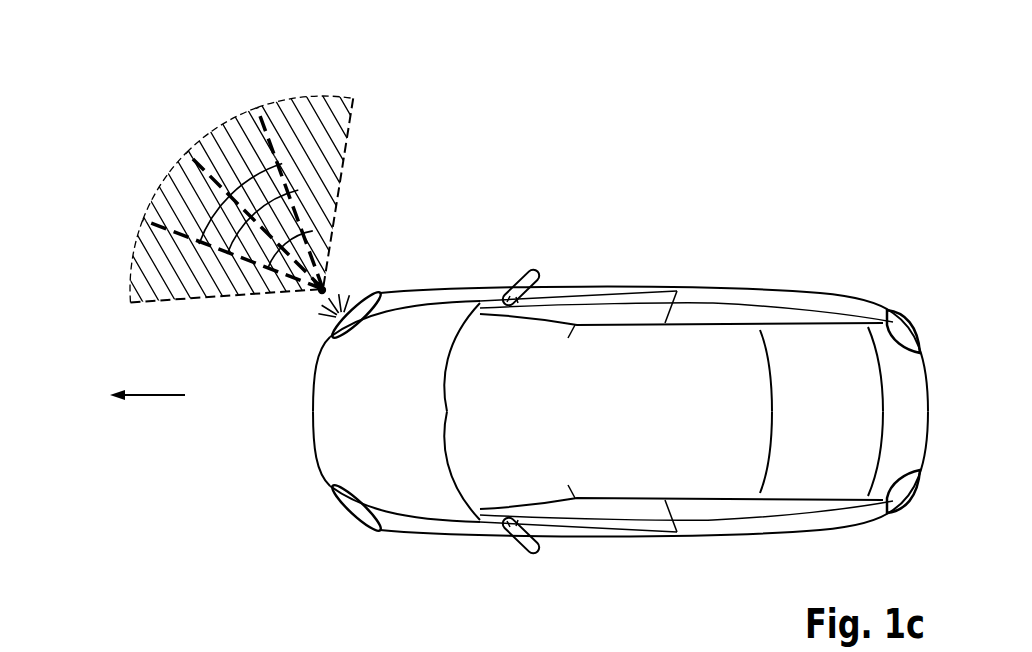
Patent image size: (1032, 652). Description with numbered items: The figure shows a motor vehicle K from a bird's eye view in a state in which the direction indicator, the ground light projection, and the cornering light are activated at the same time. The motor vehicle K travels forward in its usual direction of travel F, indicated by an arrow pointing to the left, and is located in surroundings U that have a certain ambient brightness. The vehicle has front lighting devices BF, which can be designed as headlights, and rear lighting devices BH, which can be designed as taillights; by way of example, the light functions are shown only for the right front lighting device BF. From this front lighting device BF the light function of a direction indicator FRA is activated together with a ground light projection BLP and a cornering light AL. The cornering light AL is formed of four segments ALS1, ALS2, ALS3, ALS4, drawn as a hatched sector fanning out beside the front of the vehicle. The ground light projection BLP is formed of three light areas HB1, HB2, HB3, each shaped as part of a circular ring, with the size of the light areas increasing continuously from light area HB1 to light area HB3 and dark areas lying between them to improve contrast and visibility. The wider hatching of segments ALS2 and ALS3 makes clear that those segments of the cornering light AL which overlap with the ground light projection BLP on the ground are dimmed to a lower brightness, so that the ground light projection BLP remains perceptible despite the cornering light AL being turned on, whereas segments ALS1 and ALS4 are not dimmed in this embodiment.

The cornering light AL is at (100, 93).
The ground light projection BLP is at (182, 148).
The first segment of the cornering light ALS1 is at (140, 262).
The second segment of the cornering light ALS2 is at (172, 192).
The third segment of the cornering light ALS3 is at (237, 130).
The fourth segment of the cornering light ALS4 is at (305, 110).
The first light area HB1 is at (313, 231).
The second light area HB2 is at (298, 190).
The third light area HB3 is at (282, 164).
The front lighting device BF is at (350, 310).
The direction indicator FRA is at (325, 315).
The rear lighting device BH is at (905, 337).
The motor vehicle K is at (858, 150).
The surroundings U is at (573, 92).
The direction of travel F is at (157, 397).